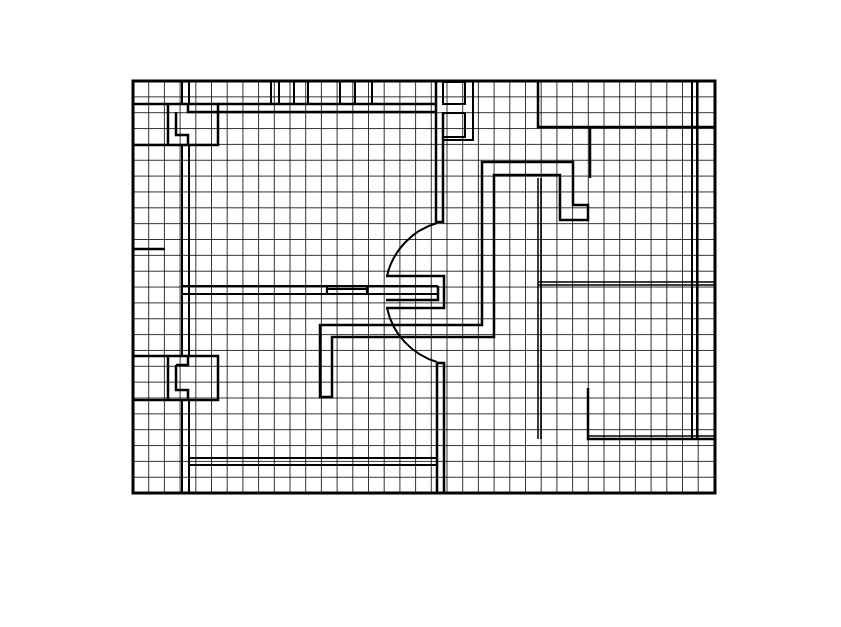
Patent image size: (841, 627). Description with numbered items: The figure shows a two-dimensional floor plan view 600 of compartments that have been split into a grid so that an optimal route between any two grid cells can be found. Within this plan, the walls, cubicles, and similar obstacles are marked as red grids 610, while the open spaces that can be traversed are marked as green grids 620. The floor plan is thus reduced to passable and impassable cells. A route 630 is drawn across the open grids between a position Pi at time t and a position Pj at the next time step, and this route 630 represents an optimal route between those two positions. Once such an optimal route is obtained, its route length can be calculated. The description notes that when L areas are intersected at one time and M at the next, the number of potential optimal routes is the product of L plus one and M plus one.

The two-dimensional floor plan view 600 is at (127, 53).
The red grids 610 is at (703, 128).
The green grids 620 is at (500, 94).
The route 630 is at (477, 342).